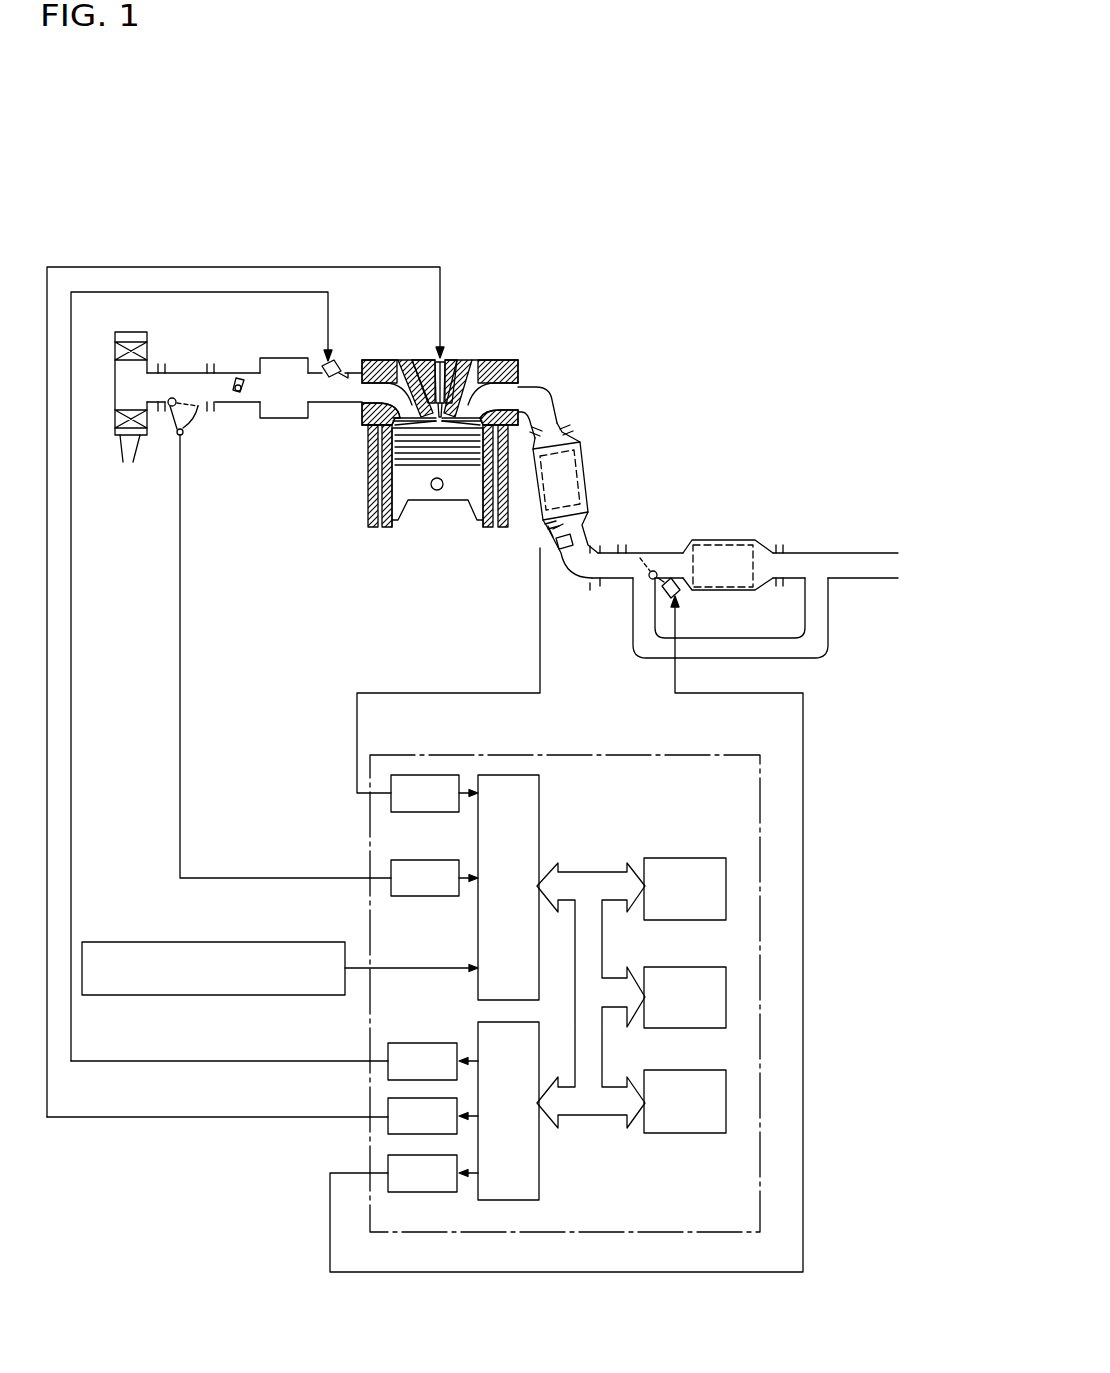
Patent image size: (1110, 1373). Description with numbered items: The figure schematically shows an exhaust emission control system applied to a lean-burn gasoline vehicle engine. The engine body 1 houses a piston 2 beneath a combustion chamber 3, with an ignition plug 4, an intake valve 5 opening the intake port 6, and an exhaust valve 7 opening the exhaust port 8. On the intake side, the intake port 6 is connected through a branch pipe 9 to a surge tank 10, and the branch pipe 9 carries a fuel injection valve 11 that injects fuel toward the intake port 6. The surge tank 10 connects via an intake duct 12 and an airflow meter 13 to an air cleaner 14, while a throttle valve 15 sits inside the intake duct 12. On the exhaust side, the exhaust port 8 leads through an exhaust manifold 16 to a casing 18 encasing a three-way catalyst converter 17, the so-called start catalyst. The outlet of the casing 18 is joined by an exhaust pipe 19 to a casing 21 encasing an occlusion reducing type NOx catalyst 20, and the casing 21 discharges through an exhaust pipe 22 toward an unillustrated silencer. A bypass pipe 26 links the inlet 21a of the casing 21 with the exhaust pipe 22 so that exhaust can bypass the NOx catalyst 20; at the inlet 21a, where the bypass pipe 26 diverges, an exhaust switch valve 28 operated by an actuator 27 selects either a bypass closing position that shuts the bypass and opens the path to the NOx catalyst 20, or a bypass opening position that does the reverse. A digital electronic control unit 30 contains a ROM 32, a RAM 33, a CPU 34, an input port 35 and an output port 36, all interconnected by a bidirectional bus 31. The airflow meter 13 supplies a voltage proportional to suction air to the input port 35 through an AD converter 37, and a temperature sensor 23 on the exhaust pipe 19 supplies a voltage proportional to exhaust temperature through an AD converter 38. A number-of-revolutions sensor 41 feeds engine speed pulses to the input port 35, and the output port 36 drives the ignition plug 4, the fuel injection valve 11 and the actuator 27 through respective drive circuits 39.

The engine body 1 is at (508, 525).
The piston 2 is at (457, 490).
The combustion chamber 3 is at (425, 425).
The ignition plug 4 is at (448, 375).
The intake valve 5 is at (395, 378).
The intake port 6 is at (373, 387).
The exhaust valve 7 is at (458, 380).
The exhaust port 8 is at (498, 388).
The branch pipe 9 is at (327, 402).
The surge tank 10 is at (280, 418).
The fuel injection valve 11 is at (320, 363).
The intake duct 12 is at (207, 373).
The airflow meter 13 is at (183, 372).
The air cleaner 14 is at (115, 375).
The throttle valve 15 is at (238, 378).
The exhaust manifold 16 is at (565, 382).
The three-way catalyst converter 17 is at (583, 475).
The casing 18 is at (585, 427).
The exhaust pipe 19 is at (600, 580).
The occlusion reducing type NOx catalyst 20 is at (728, 545).
The casing 21 is at (683, 540).
The inlet 21a is at (629, 553).
The exhaust pipe 22 is at (805, 553).
The temperature sensor 23 is at (559, 550).
The bypass pipe 26 is at (712, 645).
The actuator 27 is at (660, 592).
The exhaust switch valve 28 is at (650, 580).
The electronic control unit 30 is at (530, 755).
The bidirectional bus 31 is at (595, 872).
The ROM 32 is at (682, 858).
The RAM 33 is at (670, 967).
The CPU 34 is at (668, 1070).
The input port 35 is at (540, 790).
The output port 36 is at (540, 1184).
The AD converter 37 is at (412, 897).
The AD converter 38 is at (418, 775).
The drive circuit 39 is at (388, 1047).
The number-of-revolutions sensor 41 is at (215, 942).